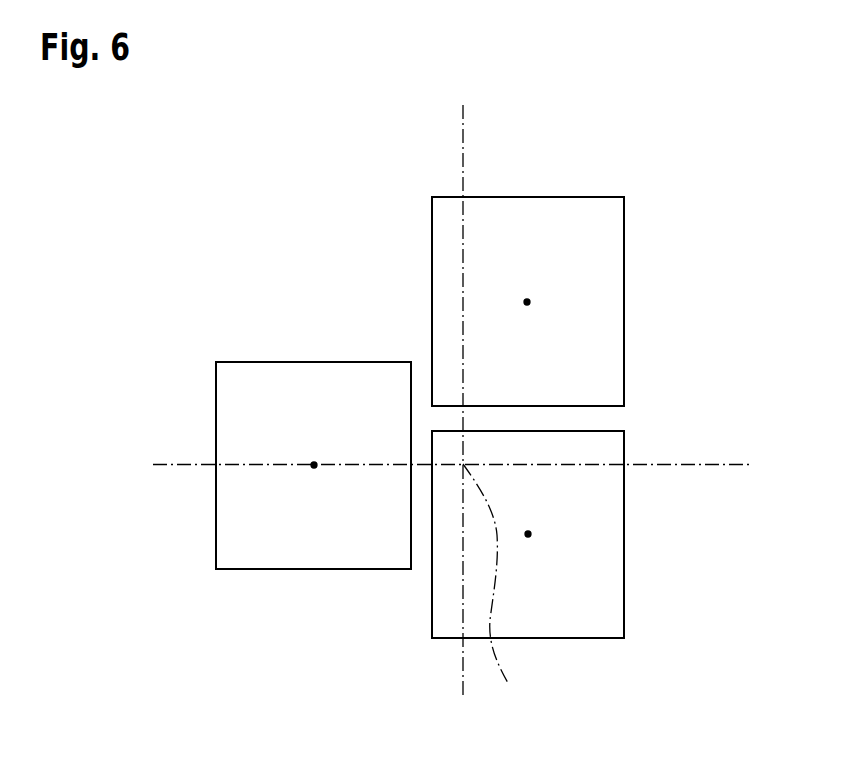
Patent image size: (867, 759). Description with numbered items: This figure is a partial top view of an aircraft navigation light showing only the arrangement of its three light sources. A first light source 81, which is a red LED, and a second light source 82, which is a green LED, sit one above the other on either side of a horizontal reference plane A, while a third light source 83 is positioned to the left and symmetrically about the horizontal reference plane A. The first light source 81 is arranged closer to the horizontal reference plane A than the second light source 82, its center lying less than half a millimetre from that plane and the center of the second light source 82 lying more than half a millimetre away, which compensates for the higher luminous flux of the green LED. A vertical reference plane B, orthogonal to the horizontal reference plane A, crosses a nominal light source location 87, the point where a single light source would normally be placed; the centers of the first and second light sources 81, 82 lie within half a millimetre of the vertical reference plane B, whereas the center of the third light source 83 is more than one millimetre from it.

The first light source 81 is at (608, 517).
The second light source 82 is at (608, 283).
The third light source 83 is at (235, 519).
The nominal light source location 87 is at (493, 591).
The horizontal reference plane A is at (727, 464).
The vertical reference plane B is at (465, 113).